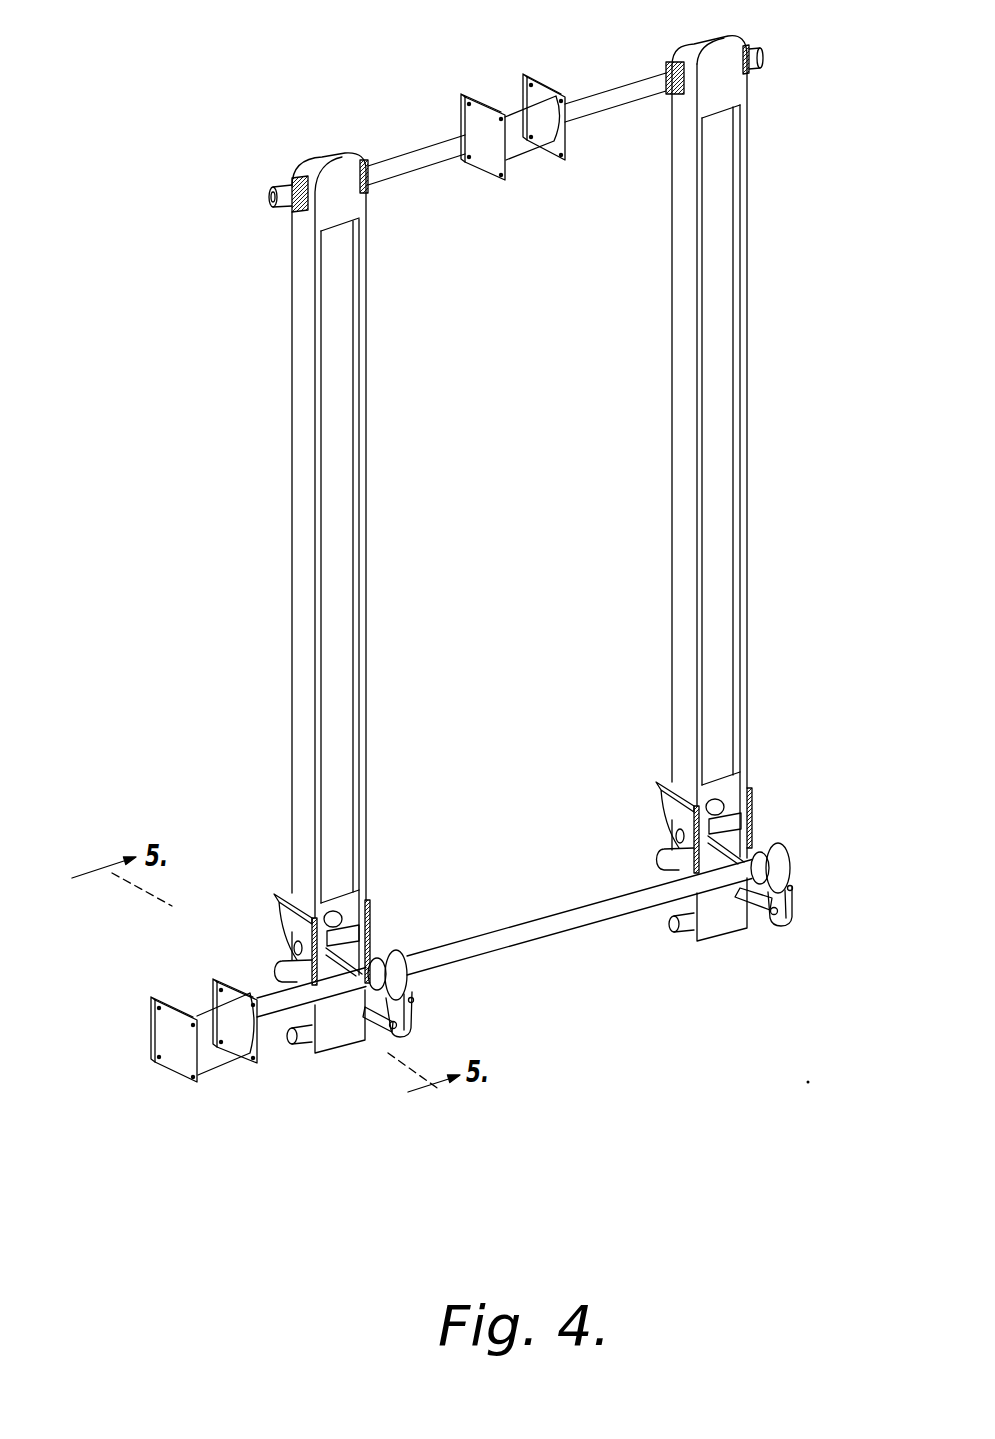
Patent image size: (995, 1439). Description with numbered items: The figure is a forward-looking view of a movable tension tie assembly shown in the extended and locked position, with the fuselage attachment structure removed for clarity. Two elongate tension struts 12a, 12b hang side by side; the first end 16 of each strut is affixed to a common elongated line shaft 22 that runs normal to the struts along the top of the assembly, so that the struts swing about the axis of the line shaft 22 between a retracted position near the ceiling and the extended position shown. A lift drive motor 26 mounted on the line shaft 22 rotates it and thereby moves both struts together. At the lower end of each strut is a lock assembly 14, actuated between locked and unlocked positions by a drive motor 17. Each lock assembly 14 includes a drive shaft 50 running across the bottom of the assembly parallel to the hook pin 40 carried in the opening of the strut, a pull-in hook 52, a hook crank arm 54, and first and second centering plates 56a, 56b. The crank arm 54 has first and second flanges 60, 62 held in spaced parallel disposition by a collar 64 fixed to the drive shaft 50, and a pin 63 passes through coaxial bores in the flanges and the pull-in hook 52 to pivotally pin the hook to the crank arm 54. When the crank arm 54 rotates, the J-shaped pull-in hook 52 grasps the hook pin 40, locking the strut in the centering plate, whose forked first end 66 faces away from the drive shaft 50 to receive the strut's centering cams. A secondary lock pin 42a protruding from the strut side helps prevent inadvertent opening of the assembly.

The first tension strut 12a is at (680, 310).
The second tension strut 12b is at (305, 390).
The lock assembly 14 is at (423, 1026).
The first end 16 is at (718, 88).
The drive motor 17 is at (173, 1039).
The line shaft 22 is at (598, 103).
The lift drive motor 26 is at (510, 100).
The hook pin 40 is at (380, 925).
The first secondary lock pin 42a is at (291, 1045).
The drive shaft 50 is at (545, 932).
The pull-in hook 52 is at (352, 1050).
The hook crank arm 54 is at (386, 958).
The first centering plate 56a is at (285, 903).
The second centering plate 56b is at (372, 912).
The first flange 60 is at (383, 1035).
The second flange 62 is at (414, 1000).
The pin 63 is at (392, 1040).
The collar 64 is at (404, 968).
The forked first end 66 is at (276, 984).